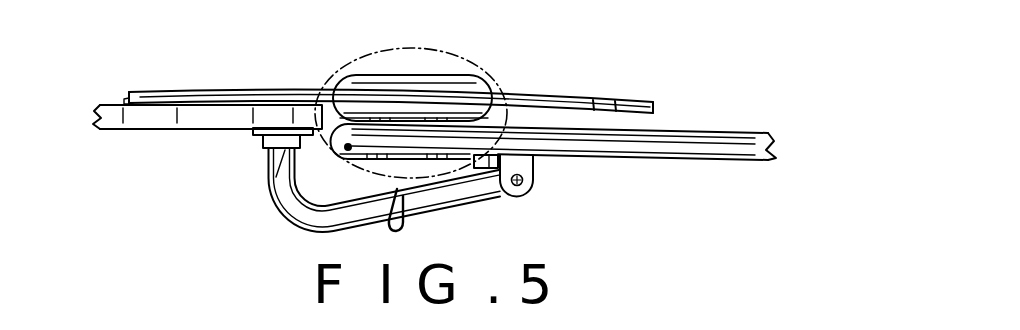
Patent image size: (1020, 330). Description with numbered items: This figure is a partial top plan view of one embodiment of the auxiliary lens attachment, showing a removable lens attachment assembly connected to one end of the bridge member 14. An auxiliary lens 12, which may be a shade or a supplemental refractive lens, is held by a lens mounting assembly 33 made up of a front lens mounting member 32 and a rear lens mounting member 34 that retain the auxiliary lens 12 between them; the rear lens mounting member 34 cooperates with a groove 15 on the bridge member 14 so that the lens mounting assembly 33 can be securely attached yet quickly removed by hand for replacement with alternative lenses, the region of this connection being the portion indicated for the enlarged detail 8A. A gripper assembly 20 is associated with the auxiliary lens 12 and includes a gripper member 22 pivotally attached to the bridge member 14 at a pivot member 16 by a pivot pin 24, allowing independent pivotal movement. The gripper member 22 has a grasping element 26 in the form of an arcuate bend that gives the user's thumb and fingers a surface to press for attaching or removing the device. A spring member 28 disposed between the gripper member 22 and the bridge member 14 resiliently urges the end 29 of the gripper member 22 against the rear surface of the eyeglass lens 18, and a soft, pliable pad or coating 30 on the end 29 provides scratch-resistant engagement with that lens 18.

The detail circle 8A is at (340, 68).
The auxiliary lens 12 is at (175, 92).
The bridge member 14 is at (727, 146).
The groove 15 is at (346, 148).
The pivot member 16 is at (534, 166).
The lens of a pair of eyeglasses 18 is at (132, 122).
The gripper assembly 20 is at (556, 220).
The gripper member 22 is at (463, 196).
The pivot pin 24 is at (525, 185).
The grasping element 26 is at (313, 226).
The spring member 28 is at (430, 207).
The end of the gripper member 29 is at (270, 182).
The pad or coating 30 is at (255, 139).
The front lens mounting member 32 is at (474, 75).
The lens mounting assembly 33 is at (466, 43).
The rear lens mounting member 34 is at (476, 120).